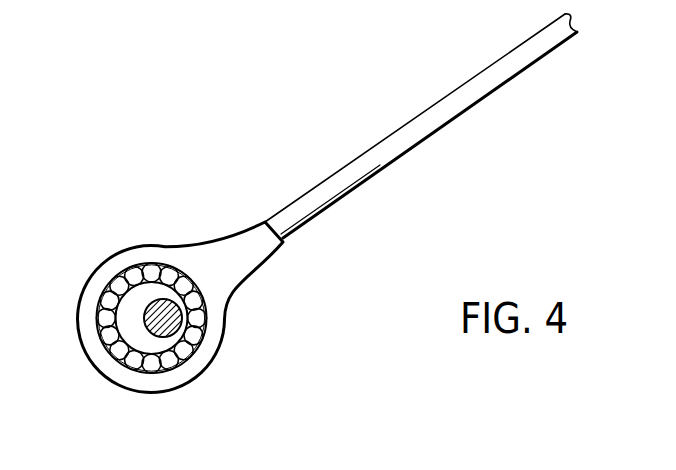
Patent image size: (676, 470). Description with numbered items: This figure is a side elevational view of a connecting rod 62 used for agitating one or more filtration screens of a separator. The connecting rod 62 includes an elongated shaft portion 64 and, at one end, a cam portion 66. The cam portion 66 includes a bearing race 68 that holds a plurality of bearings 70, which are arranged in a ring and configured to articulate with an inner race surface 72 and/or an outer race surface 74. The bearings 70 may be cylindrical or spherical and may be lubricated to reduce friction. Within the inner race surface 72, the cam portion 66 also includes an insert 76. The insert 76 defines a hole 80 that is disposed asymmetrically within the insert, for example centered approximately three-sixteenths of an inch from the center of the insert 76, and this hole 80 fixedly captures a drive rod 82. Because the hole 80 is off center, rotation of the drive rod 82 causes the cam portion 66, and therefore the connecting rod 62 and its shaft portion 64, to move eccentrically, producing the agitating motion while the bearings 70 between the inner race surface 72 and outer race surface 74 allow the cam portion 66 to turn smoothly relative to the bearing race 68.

The connecting rod 62 is at (260, 92).
The shaft portion 64 is at (534, 65).
The cam portion 66 is at (150, 394).
The bearing race 68 is at (205, 323).
The bearings 70 is at (160, 247).
The inner race surface 72 is at (103, 298).
The outer race surface 74 is at (107, 355).
The insert 76 is at (150, 340).
The hole 80 is at (185, 315).
The drive rod 82 is at (166, 299).